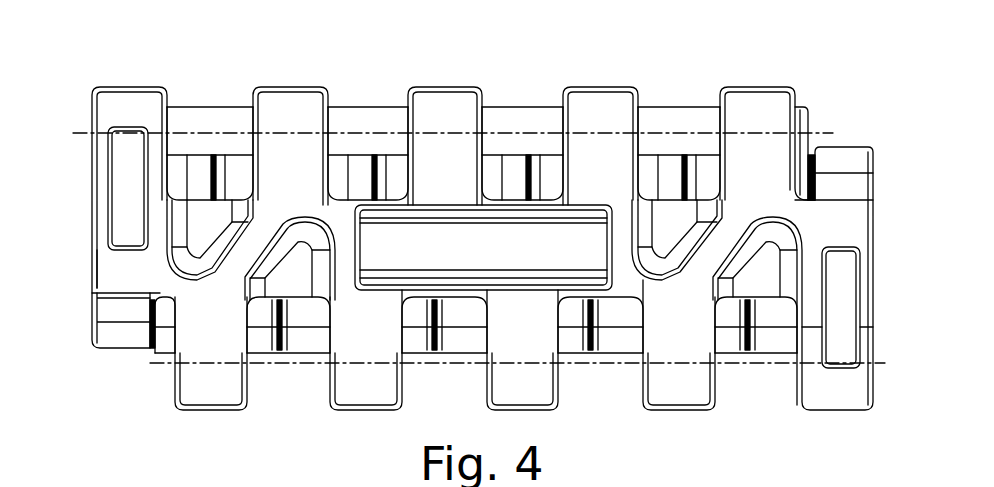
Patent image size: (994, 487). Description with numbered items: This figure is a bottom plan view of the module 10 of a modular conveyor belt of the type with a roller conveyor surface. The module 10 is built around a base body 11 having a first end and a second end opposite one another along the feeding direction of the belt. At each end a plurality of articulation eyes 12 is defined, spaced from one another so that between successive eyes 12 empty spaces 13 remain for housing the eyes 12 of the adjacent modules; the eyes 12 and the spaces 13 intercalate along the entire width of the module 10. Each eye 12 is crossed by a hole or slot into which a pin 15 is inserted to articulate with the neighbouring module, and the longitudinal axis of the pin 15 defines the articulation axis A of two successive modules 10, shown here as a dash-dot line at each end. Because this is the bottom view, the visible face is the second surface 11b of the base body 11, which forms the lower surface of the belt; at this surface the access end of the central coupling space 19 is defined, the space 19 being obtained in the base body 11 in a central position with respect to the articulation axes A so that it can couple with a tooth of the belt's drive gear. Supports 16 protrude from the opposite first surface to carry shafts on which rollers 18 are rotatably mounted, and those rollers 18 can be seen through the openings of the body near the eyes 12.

The module 10 is at (100, 64).
The base body 11 is at (148, 307).
The second surface 11b is at (128, 268).
The articulation eye 12 is at (598, 95).
The empty space 13 is at (658, 98).
The pin 15 is at (682, 118).
The support 16 is at (862, 187).
The roller 18 is at (187, 173).
The coupling space 19 is at (510, 250).
The articulation axis A is at (823, 127).